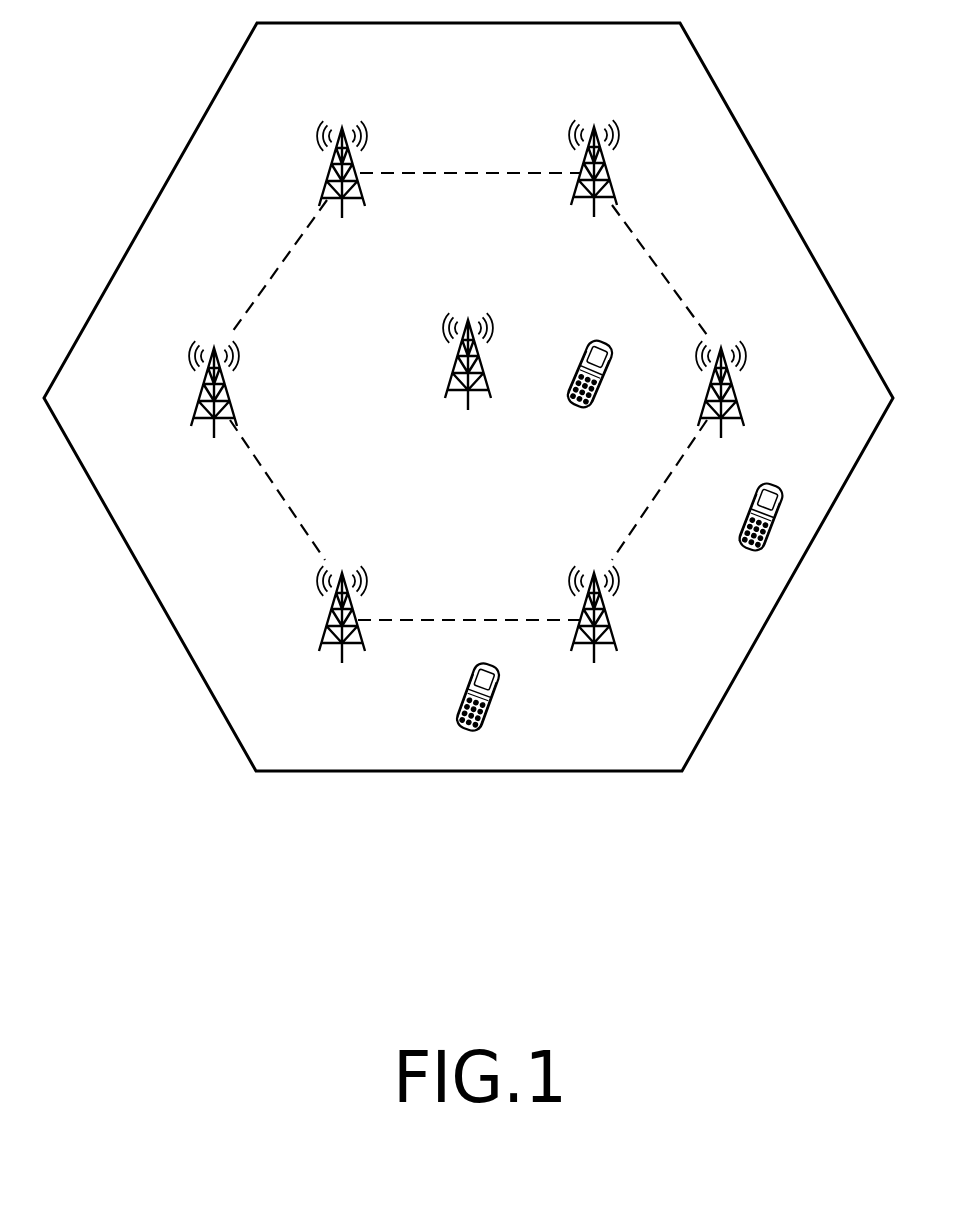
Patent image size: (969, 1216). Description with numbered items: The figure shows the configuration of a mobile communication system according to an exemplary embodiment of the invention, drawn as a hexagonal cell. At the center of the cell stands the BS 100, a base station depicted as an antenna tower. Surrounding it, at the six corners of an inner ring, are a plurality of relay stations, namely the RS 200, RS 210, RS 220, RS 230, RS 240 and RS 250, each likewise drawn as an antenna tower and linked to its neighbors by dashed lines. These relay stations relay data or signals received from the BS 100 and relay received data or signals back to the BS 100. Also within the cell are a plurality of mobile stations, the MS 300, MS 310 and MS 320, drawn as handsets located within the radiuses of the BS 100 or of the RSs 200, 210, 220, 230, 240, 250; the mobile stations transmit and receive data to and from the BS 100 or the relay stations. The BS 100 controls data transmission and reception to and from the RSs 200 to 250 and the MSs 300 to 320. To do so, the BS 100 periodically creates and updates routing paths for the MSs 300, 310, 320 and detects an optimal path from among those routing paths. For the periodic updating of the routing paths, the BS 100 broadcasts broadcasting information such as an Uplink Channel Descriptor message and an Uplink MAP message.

The BS 100 is at (458, 352).
The RS 200 is at (606, 160).
The RS 210 is at (330, 163).
The RS 220 is at (205, 385).
The RS 230 is at (326, 620).
The RS 240 is at (612, 620).
The RS 250 is at (732, 383).
The MS 300 is at (746, 522).
The MS 310 is at (591, 408).
The MS 320 is at (492, 712).